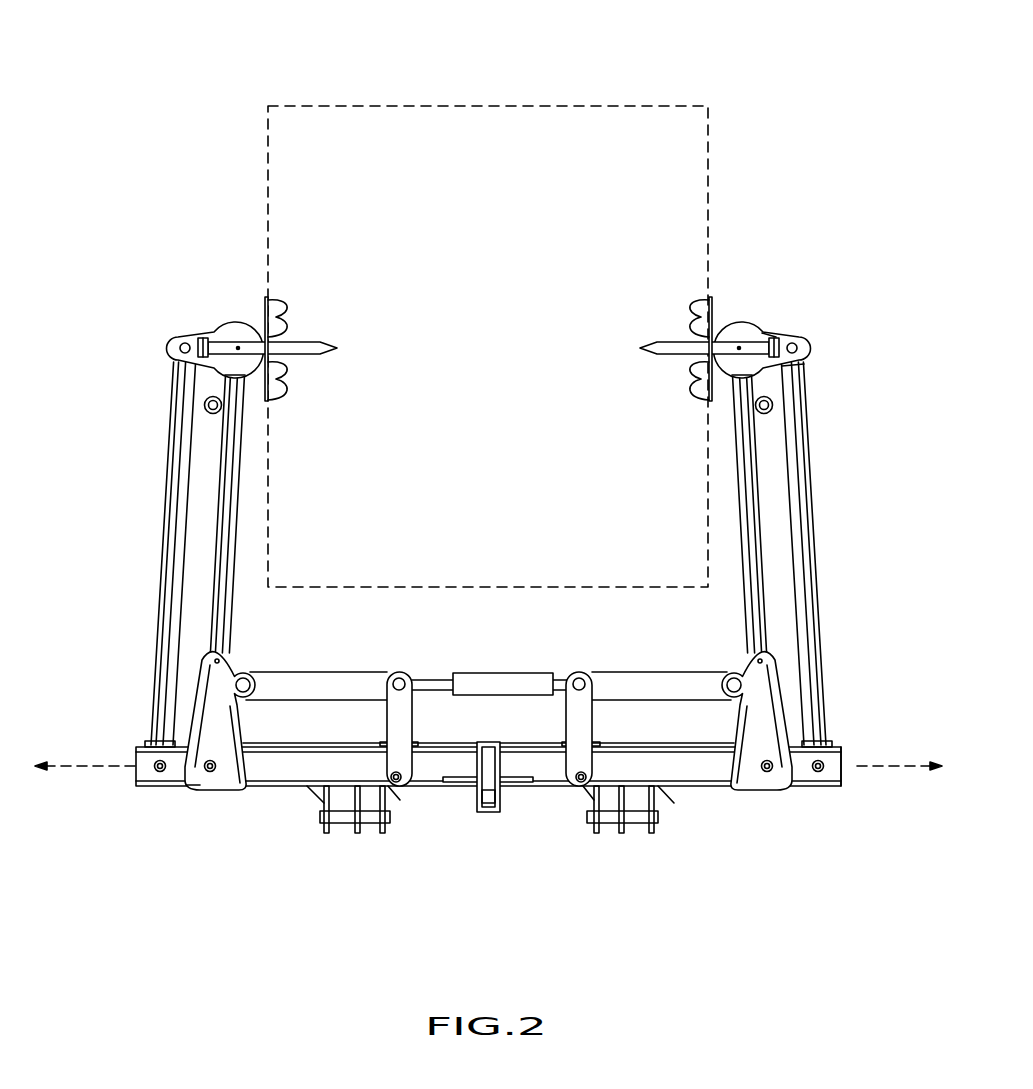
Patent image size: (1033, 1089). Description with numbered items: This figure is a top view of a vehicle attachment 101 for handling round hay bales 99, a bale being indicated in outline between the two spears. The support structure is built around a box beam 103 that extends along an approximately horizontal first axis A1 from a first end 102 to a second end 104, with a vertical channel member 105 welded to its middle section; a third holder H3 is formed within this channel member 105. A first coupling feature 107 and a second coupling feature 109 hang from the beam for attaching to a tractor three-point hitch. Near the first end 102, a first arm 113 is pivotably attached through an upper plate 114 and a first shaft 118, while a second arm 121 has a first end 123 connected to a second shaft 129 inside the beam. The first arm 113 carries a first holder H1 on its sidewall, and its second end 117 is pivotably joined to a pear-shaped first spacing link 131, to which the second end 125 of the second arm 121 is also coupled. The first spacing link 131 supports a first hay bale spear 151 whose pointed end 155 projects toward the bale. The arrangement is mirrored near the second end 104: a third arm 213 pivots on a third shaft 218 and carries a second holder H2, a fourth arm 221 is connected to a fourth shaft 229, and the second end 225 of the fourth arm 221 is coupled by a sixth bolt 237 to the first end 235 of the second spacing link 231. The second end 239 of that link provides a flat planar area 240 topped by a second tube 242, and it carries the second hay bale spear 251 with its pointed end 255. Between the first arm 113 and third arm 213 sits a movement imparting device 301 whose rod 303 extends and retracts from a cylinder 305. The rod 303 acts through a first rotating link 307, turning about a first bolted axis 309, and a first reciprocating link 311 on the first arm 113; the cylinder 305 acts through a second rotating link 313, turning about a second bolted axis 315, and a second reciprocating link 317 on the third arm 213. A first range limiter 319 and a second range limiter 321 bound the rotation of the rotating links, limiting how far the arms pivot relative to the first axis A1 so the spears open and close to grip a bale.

The round hay bales 99 is at (462, 116).
The vehicle attachment 101 is at (824, 203).
The first end 102 is at (140, 770).
The box beam 103 is at (433, 783).
The second end 104 is at (843, 779).
The channel member 105 is at (509, 808).
The first coupling feature 107 is at (361, 846).
The second coupling feature 109 is at (614, 846).
The first arm 113 is at (233, 524).
The upper plate 114 is at (222, 736).
The second end 117 is at (265, 400).
The first shaft 118 is at (210, 772).
The second arm 121 is at (176, 520).
The first end 123 is at (130, 729).
The second end 125 is at (164, 362).
The second shaft 129 is at (160, 772).
The first spacing link 131 is at (232, 326).
The first hay bale spear 151 is at (312, 300).
The pointed end 155 is at (318, 343).
The third arm 213 is at (745, 510).
The third shaft 218 is at (767, 772).
The fourth arm 221 is at (806, 510).
The second end 225 is at (804, 372).
The fourth shaft 229 is at (818, 772).
The second spacing link 231 is at (750, 327).
The first end 235 is at (806, 350).
The sixth bolt 237 is at (800, 338).
The second end 239 is at (714, 305).
The flat planar area 240 is at (742, 370).
The second tube 242 is at (734, 340).
The second hay bale spear 251 is at (662, 320).
The pointed end 255 is at (648, 352).
The movement imparting device 301 is at (498, 642).
The rod 303 is at (418, 682).
The cylinder 305 is at (531, 673).
The first rotating link 307 is at (430, 773).
The first bolted axis 309 is at (398, 792).
The first reciprocating link 311 is at (302, 680).
The second rotating link 313 is at (549, 770).
The second bolted axis 315 is at (582, 790).
The second reciprocating link 317 is at (656, 680).
The first range limiter 319 is at (381, 720).
The second range limiter 321 is at (602, 732).
The first axis A1 is at (66, 765).
The first holder H1 is at (206, 410).
The second holder H2 is at (768, 410).
The third holder H3 is at (497, 796).